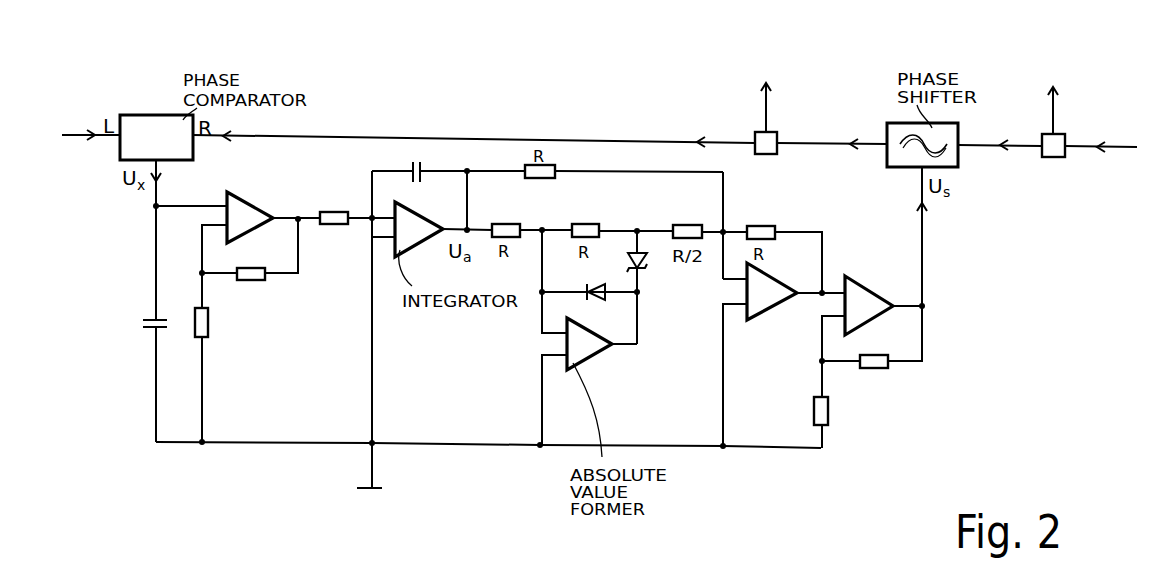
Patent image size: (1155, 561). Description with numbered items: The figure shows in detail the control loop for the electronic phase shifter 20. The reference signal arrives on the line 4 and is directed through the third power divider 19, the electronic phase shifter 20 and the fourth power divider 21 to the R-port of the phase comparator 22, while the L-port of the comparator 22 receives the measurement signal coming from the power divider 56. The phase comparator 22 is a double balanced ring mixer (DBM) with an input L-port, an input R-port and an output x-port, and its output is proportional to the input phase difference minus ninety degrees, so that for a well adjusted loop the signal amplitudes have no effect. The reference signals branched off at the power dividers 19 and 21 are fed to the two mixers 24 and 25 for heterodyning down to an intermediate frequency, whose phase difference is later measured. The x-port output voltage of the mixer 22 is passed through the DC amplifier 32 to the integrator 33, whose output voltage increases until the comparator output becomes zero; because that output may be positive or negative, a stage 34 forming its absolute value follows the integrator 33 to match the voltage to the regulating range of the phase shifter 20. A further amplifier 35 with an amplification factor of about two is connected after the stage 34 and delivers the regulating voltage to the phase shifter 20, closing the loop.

The reference signal line 4 is at (1101, 157).
The third power divider 19 is at (1042, 137).
The electronic phase shifter 20 is at (887, 130).
The fourth power divider 21 is at (755, 136).
The phase comparator 22 is at (173, 122).
The mixer 24 is at (1053, 98).
The mixer 25 is at (768, 96).
The DC amplifier 32 is at (245, 210).
The integrator 33 is at (400, 247).
The absolute value forming stage 34 is at (573, 352).
The amplifier 35 is at (857, 297).
The power divider 56 is at (91, 147).